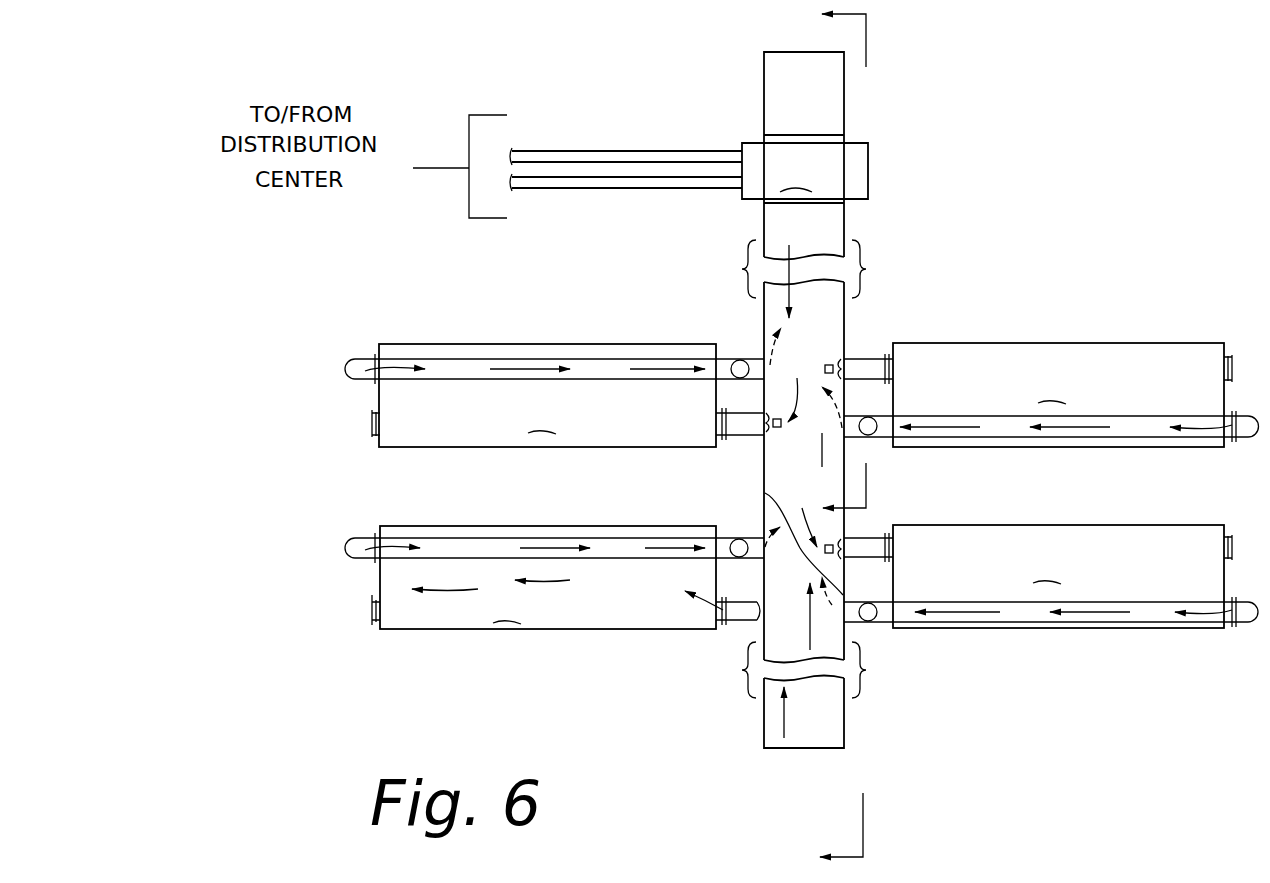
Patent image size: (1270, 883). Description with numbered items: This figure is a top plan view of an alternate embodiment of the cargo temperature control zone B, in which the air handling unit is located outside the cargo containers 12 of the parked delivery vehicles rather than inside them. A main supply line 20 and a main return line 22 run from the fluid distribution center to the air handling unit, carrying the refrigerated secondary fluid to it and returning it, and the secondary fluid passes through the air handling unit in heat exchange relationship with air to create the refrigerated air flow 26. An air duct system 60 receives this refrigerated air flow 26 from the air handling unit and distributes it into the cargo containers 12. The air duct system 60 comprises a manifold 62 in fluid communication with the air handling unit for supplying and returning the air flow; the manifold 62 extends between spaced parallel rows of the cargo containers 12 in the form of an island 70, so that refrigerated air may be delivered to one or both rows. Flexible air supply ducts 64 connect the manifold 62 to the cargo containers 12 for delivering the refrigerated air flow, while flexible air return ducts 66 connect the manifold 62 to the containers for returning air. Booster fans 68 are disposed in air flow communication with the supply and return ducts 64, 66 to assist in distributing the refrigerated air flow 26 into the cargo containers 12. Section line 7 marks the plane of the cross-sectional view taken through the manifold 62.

The cargo container 12 is at (802, 486).
The main supply line 20 is at (650, 150).
The main return line 22 is at (660, 190).
The refrigerated air flow 26 is at (820, 357).
The air duct system 60 is at (760, 320).
The manifold 62 is at (848, 228).
The flexible air supply duct 64 is at (738, 623).
The flexible air return duct 66 is at (737, 532).
The booster fan 68 is at (818, 545).
The island 70 is at (787, 469).
The section line for FIG. 7 is at (835, 435).
The cargo temperature control zone B is at (878, 257).